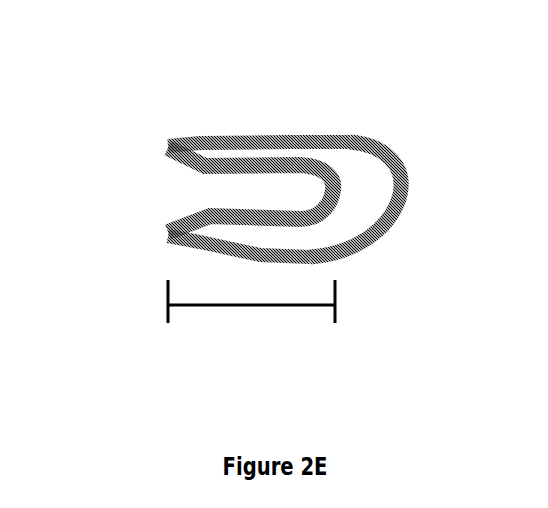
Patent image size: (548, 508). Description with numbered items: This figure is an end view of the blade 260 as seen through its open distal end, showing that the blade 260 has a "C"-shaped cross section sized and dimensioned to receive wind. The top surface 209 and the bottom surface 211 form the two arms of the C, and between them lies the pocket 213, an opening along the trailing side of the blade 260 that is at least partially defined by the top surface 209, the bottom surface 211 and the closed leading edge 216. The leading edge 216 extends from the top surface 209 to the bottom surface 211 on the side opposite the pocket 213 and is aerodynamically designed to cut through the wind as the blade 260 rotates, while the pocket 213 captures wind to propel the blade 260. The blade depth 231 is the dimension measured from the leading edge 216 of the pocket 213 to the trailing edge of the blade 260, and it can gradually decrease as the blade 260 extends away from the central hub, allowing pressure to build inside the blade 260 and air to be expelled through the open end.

The blade 260 is at (270, 159).
The top surface 209 is at (212, 137).
The pocket 213 is at (166, 193).
The bottom surface 211 is at (197, 242).
The leading edge 216 is at (414, 196).
The blade depth 231 is at (251, 324).